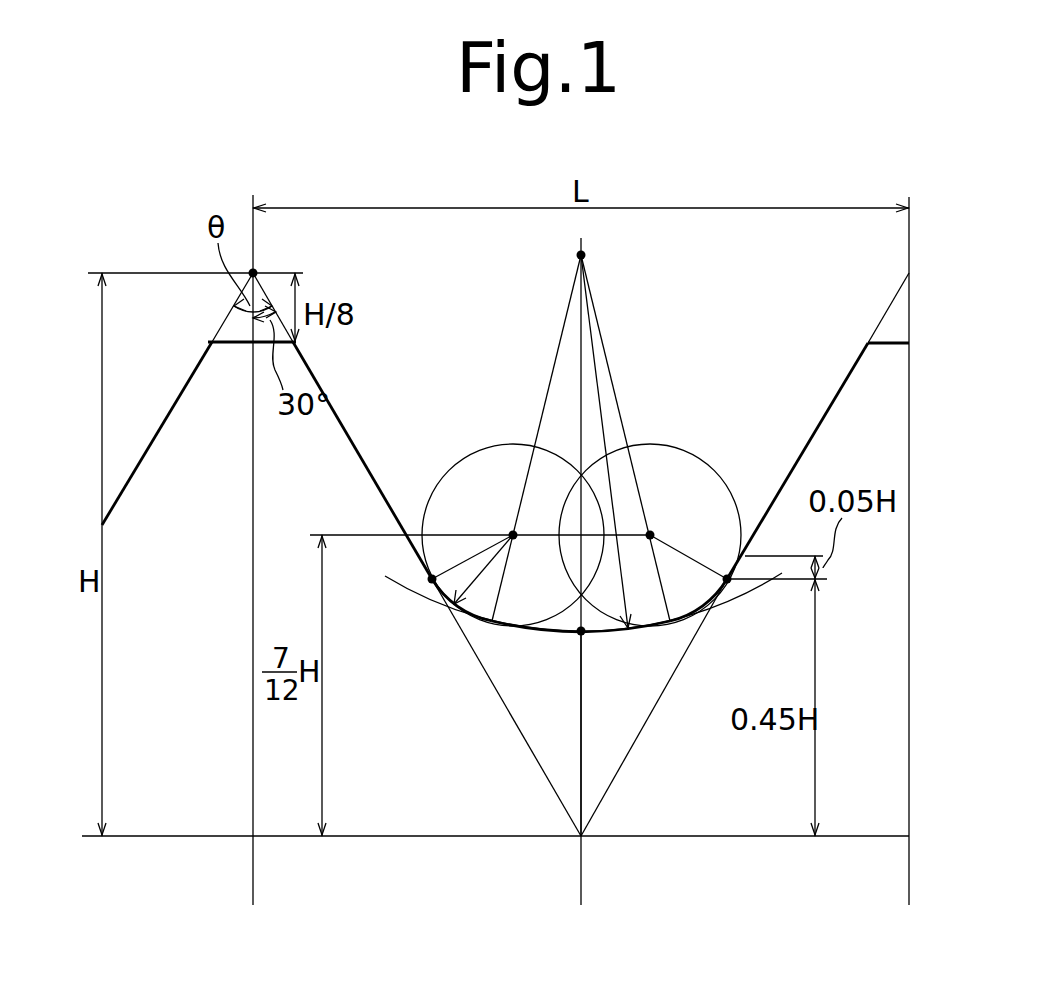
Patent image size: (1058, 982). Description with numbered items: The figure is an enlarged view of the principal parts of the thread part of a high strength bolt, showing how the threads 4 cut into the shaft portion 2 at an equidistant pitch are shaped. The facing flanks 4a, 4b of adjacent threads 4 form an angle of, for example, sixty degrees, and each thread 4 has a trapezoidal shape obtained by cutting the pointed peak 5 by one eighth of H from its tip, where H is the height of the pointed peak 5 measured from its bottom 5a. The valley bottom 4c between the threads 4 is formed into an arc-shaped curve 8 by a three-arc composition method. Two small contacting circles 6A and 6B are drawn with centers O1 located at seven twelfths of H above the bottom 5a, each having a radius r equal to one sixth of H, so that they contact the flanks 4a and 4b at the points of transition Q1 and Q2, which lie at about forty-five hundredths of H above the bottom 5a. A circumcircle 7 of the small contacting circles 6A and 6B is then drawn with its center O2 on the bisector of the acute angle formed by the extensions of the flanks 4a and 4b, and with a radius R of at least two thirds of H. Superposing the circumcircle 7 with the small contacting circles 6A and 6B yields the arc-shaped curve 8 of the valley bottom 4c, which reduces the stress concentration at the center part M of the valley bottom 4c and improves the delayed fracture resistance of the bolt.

The shaft portion 2 is at (195, 812).
The thread 4 is at (196, 338).
The flank 4a is at (338, 420).
The flank 4b is at (152, 438).
The valley bottom 4c is at (579, 634).
The pointed peak 5 is at (257, 271).
The bottom of the pointed peak 5a is at (300, 838).
The small contacting circle 6A is at (455, 447).
The small contacting circle 6B is at (690, 455).
The circumcircle 7 is at (543, 634).
The arc-shaped curve 8 is at (618, 634).
The center of small contacting circle O1 is at (513, 534).
The center of circumcircle O2 is at (583, 255).
The point of transition Q1 is at (426, 583).
The point of transition Q2 is at (729, 583).
The radius of circumcircle R is at (605, 426).
The radius of small contacting circle r is at (483, 567).
The center part of valley bottom M is at (583, 635).